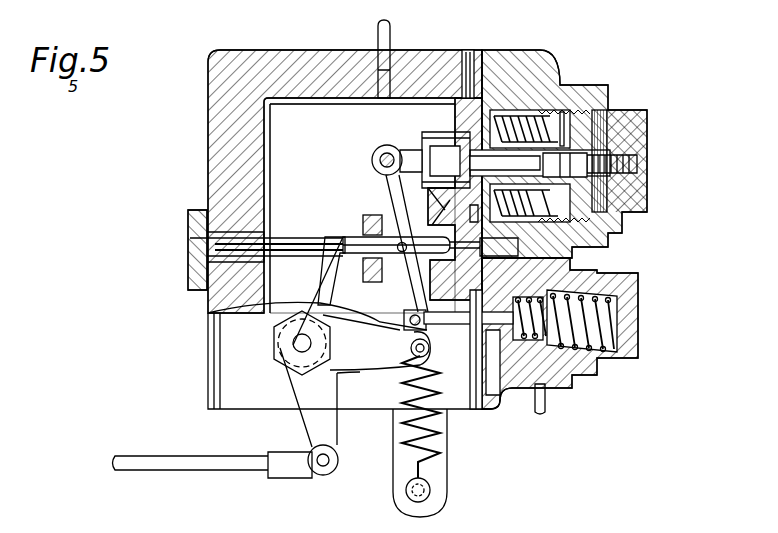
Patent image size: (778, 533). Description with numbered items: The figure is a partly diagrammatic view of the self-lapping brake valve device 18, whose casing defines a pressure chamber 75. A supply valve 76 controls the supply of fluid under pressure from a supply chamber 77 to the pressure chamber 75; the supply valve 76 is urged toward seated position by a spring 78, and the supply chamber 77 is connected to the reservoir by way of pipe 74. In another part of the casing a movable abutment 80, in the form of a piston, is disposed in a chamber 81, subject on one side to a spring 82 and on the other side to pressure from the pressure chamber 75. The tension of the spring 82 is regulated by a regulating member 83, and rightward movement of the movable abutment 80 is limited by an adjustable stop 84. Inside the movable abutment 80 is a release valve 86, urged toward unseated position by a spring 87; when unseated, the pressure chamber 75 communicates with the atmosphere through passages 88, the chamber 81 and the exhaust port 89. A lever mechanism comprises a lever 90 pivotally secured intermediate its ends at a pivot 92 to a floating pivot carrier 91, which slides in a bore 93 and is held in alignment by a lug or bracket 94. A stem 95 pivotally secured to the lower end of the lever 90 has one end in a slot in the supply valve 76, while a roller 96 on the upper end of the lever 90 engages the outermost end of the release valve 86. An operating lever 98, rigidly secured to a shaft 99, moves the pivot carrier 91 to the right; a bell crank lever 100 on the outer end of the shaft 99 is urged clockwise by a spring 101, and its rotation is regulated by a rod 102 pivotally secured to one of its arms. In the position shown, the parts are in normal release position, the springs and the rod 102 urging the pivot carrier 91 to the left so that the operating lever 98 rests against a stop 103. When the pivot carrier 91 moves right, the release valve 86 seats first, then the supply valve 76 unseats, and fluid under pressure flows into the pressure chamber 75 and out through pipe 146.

The self-lapping brake valve device 18 is at (248, 52).
The pipe 146 is at (377, 36).
The pressure chamber 75 is at (285, 118).
The movable abutment 80 is at (466, 100).
The exhaust port 89 is at (505, 62).
The chamber 81 is at (520, 116).
The spring 82 is at (540, 140).
The regulating member 83 is at (555, 152).
The passages 88 is at (606, 102).
The adjustable stop 84 is at (640, 160).
The spring 87 is at (430, 142).
The release valve 86 is at (424, 158).
The roller 96 is at (380, 166).
The lever 90 is at (400, 200).
The stop 103 is at (292, 248).
The floating pivot carrier 91 is at (352, 238).
The operating lever 98 is at (316, 290).
The lug or bracket 94 is at (366, 262).
The pivot 92 is at (406, 275).
The stem 95 is at (436, 314).
The bore 93 is at (578, 254).
The spring 78 is at (600, 318).
The supply chamber 77 is at (494, 398).
The supply valve 76 is at (500, 402).
The pipe 74 is at (546, 414).
The shaft 99 is at (302, 343).
The bell crank lever 100 is at (292, 390).
The rod 102 is at (178, 458).
The spring 101 is at (434, 460).